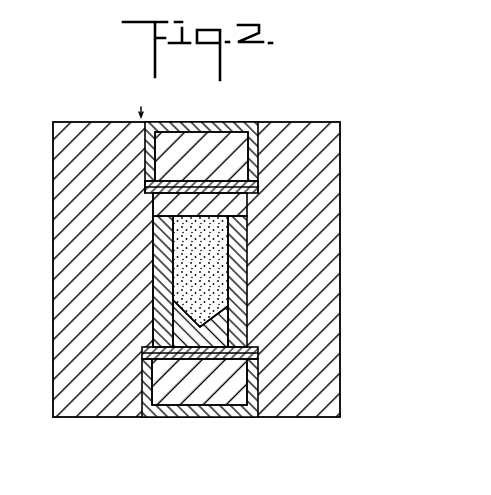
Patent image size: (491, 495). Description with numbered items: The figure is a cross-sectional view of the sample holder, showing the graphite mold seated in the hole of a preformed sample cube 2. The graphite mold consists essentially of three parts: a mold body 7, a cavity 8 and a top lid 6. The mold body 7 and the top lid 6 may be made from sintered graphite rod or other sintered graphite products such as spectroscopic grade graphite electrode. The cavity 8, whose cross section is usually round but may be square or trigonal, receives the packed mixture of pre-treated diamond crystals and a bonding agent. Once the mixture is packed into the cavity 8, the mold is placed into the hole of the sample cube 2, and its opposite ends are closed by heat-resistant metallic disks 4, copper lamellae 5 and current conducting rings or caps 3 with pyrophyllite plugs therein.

The preformed sample cube 2 is at (303, 358).
The current conducting ring or cap 3 is at (258, 131).
The heat-resistant metallic disk 4 is at (258, 183).
The copper lamella 5 is at (256, 196).
The top lid 6 is at (155, 200).
The mold body 7 is at (157, 279).
The cavity 8 is at (213, 293).